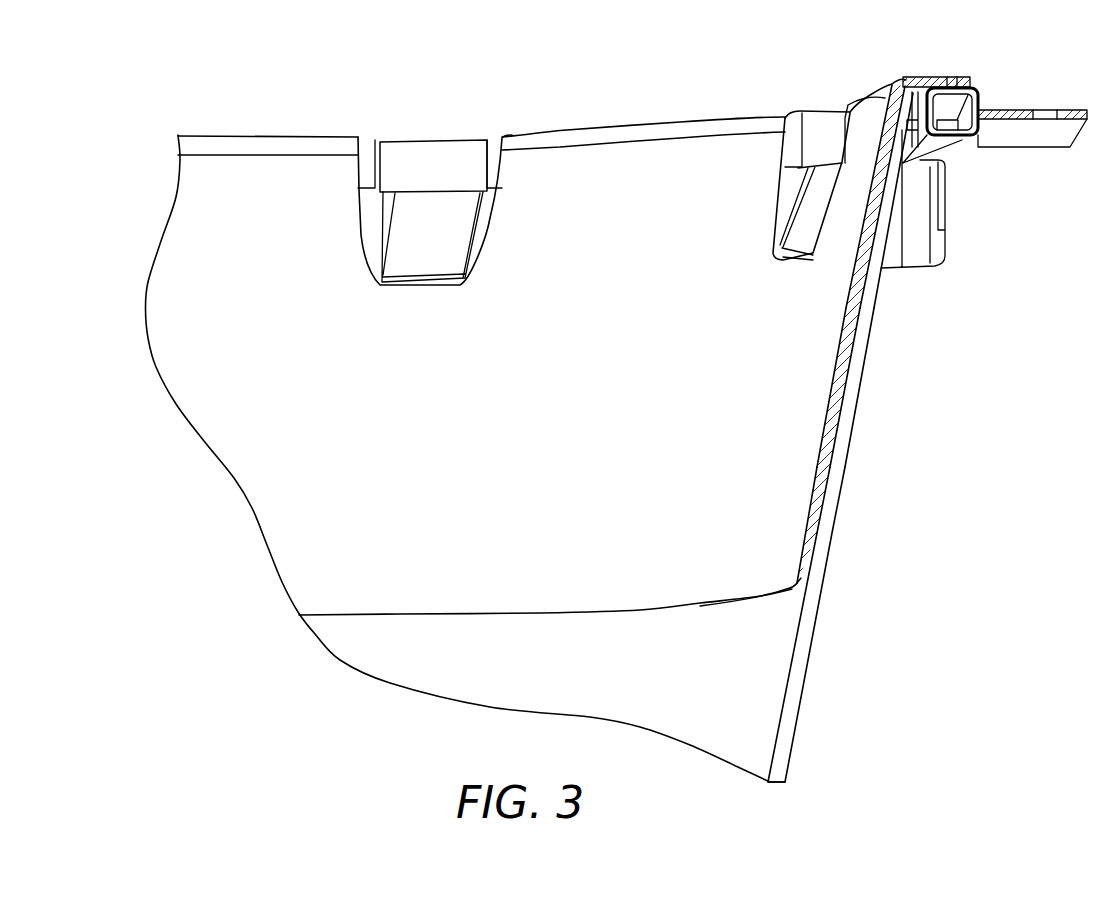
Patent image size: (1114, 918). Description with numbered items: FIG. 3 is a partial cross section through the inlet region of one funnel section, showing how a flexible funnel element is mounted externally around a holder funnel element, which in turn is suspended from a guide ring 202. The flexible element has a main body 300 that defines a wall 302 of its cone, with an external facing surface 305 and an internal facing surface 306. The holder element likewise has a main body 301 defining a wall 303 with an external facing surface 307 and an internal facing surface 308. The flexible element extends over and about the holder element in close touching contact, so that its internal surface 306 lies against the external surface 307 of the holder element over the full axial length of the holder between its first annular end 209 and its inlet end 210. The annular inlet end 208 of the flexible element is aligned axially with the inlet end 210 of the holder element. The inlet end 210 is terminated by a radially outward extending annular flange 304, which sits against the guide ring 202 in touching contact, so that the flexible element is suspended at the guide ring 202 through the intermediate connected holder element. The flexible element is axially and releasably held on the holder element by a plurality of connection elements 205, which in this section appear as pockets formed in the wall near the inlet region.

The guide ring 202 is at (978, 133).
The connection elements 205 is at (438, 182).
The annular inlet end 208 is at (900, 78).
The first annular end 209 is at (798, 590).
The second (inlet) end 210 is at (716, 115).
The main body 300 is at (778, 789).
The main body 301 is at (718, 614).
The wall 302 is at (866, 330).
The wall 303 is at (838, 355).
The annular flange 304 is at (940, 76).
The external facing surface 305 is at (856, 414).
The internal facing surface 306 is at (829, 436).
The external facing surface 307 is at (822, 492).
The internal facing surface 308 is at (804, 537).